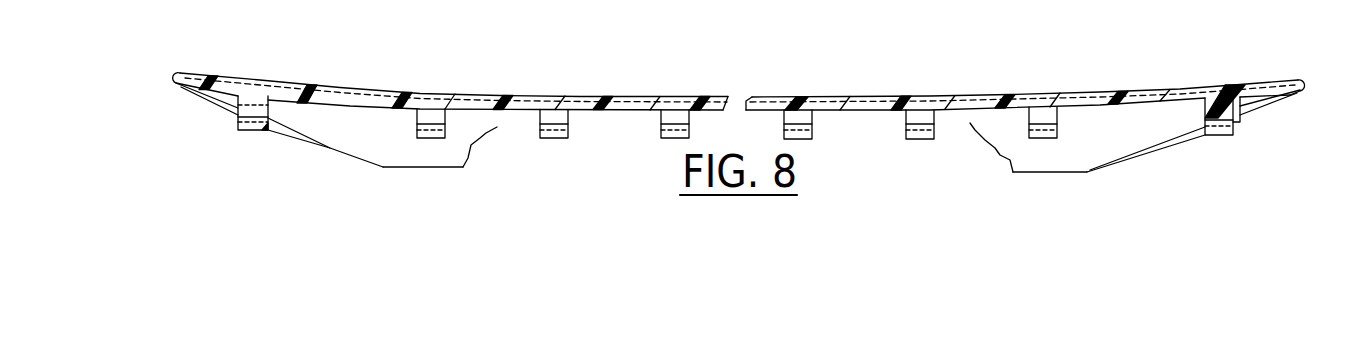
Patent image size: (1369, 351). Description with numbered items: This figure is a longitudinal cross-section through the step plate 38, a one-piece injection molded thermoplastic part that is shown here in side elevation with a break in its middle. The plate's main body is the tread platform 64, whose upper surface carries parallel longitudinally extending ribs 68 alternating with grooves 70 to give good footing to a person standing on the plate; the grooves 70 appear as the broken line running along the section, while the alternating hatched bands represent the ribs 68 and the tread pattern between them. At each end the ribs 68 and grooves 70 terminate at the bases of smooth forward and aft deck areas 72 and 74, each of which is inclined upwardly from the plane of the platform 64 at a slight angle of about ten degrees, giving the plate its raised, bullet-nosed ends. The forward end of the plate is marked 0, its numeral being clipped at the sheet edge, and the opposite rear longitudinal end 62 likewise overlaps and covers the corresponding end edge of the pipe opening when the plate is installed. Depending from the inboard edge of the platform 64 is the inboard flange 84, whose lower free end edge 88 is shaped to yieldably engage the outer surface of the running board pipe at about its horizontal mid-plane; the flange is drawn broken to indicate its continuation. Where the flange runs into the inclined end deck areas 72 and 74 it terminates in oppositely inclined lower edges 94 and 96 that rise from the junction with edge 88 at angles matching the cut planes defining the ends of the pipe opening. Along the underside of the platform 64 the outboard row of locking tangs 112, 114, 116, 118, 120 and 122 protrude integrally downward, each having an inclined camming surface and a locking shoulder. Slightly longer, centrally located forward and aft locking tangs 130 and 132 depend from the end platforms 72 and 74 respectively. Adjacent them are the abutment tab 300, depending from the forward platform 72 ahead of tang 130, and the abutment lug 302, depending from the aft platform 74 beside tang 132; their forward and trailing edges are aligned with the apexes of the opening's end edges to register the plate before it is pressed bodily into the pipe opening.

The left end tip 0 is at (173, 77).
The step plate 38 is at (707, 89).
The longitudinal end 62 is at (1307, 82).
The tread platform 64 is at (478, 100).
The ribs 68 is at (577, 98).
The grooves 70 is at (618, 93).
The forward inclined deck area 72 is at (281, 90).
The aft inclined deck area 74 is at (1161, 96).
The inboard flange 84 is at (470, 168).
The lower free end edge 88 is at (415, 168).
The lower edge 94 is at (310, 143).
The lower edge 96 is at (1283, 107).
The locking tang 112 is at (417, 126).
The locking tang 114 is at (548, 140).
The locking tang 116 is at (673, 140).
The locking tang 118 is at (813, 132).
The locking tang 120 is at (920, 140).
The locking tang 122 is at (1060, 128).
The forward locking tang 130 is at (253, 131).
The aft locking tang 132 is at (1222, 136).
The abutment tab 300 is at (237, 113).
The abutment lug 302 is at (1238, 110).